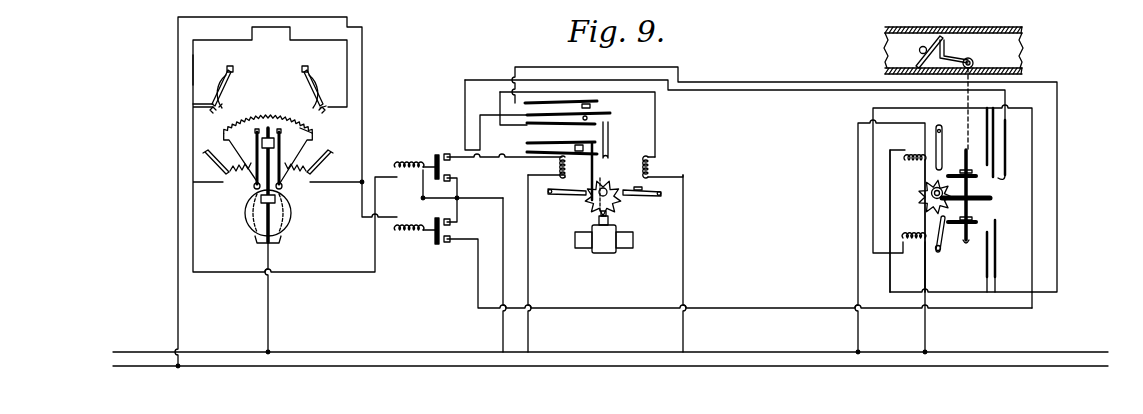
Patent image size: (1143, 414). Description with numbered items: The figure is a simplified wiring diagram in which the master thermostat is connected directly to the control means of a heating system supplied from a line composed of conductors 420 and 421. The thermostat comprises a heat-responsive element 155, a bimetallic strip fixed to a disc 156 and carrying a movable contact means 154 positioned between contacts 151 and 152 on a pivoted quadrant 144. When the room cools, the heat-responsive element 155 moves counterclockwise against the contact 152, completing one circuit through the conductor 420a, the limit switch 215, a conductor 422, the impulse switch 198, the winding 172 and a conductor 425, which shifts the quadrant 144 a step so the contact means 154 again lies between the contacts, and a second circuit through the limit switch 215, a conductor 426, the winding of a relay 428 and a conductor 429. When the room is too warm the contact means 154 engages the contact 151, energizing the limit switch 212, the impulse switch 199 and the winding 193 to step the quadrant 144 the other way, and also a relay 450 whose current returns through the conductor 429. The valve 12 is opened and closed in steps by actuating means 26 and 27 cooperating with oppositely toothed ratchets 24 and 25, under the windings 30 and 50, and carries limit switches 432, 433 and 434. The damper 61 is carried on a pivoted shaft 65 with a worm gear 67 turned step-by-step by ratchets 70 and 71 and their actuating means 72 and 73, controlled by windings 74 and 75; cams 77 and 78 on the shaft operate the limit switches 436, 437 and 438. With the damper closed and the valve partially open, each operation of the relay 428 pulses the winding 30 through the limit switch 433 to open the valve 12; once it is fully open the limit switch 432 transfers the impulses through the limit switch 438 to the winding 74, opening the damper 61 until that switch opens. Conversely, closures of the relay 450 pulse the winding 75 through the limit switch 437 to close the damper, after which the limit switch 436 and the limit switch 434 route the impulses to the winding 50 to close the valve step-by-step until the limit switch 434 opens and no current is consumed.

The valve 12 is at (606, 247).
The ratchet 24 is at (615, 205).
The ratchet 25 is at (594, 204).
The actuating means 26 is at (644, 200).
The actuating means 27 is at (562, 200).
The winding 30 is at (663, 162).
The winding 50 is at (566, 174).
The damper 61 is at (935, 37).
The pivoted shaft 65 is at (955, 240).
The worm gear 67 is at (990, 197).
The ratchet 70 is at (922, 197).
The ratchet 71 is at (963, 171).
The actuating means 72 is at (950, 151).
The actuating means 73 is at (944, 254).
The winding 74 is at (910, 167).
The winding 75 is at (921, 203).
The cam 77 is at (975, 177).
The cam 78 is at (975, 222).
The quadrant 144 is at (285, 170).
The contact 151 is at (305, 132).
The contact 152 is at (277, 133).
The movable contact means 154 is at (268, 120).
The heat-responsive element 155 is at (266, 176).
The disc 156 is at (290, 218).
The winding 172 is at (312, 110).
The winding 193 is at (212, 107).
The impulse switch 198 is at (309, 66).
The impulse switch 199 is at (235, 55).
The limit switch 212 is at (330, 153).
The limit switch 215 is at (207, 158).
The conductor 420 is at (221, 352).
The conductor 420a is at (270, 323).
The conductor 421 is at (222, 368).
The conductor 422 is at (192, 68).
The conductor 425 is at (178, 244).
The conductor 426 is at (303, 272).
The relay 428 is at (410, 177).
The conductor 429 is at (503, 322).
The limit switch 432 is at (616, 109).
The limit switch 433 is at (608, 120).
The limit switch 434 is at (584, 142).
The limit switch 436 is at (1004, 179).
The limit switch 437 is at (998, 153).
The limit switch 438 is at (1010, 232).
The relay 450 is at (396, 236).